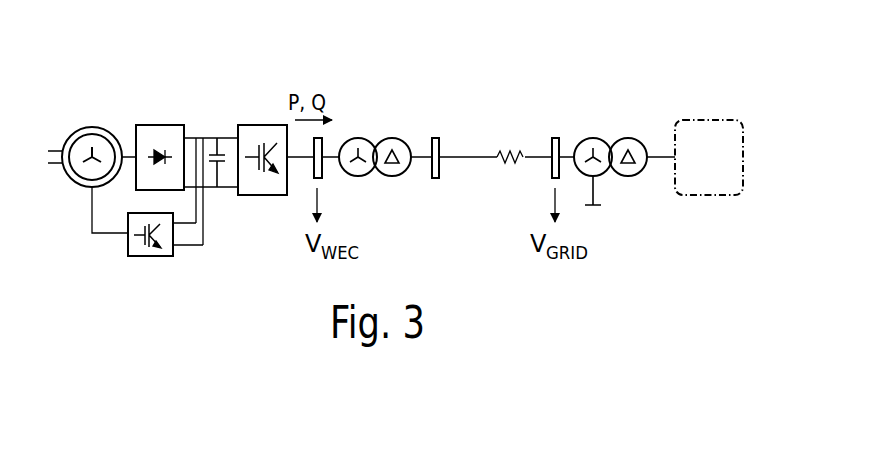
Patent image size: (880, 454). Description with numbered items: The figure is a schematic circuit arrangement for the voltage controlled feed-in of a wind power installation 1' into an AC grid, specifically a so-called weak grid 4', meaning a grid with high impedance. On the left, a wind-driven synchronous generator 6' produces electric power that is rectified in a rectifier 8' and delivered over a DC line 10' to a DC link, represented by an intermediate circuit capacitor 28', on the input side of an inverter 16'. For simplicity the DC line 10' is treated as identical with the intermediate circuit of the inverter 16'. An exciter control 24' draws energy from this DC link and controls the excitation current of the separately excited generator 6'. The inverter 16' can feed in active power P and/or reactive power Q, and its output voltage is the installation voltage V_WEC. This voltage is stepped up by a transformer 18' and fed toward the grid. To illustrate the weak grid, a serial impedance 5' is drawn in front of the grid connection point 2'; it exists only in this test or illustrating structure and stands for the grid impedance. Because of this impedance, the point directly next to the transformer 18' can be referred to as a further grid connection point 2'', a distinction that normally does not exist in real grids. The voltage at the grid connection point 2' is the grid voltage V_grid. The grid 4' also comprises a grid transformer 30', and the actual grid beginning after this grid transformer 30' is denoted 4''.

The wind power installation 1' is at (171, 173).
The grid connection point 2' is at (549, 124).
The grid connection point 2'' is at (444, 203).
The weak grid 4' is at (699, 111).
The grid 4'' is at (709, 124).
The serial impedance 5' is at (508, 120).
The generator 6' is at (89, 130).
The rectifier 8' is at (157, 124).
The DC line 10' is at (211, 131).
The inverter 16' is at (262, 127).
The transformer 18' is at (375, 109).
The exciter control 24' is at (147, 259).
The intermediate circuit capacitor 28' is at (220, 202).
The grid transformer 30' is at (630, 203).